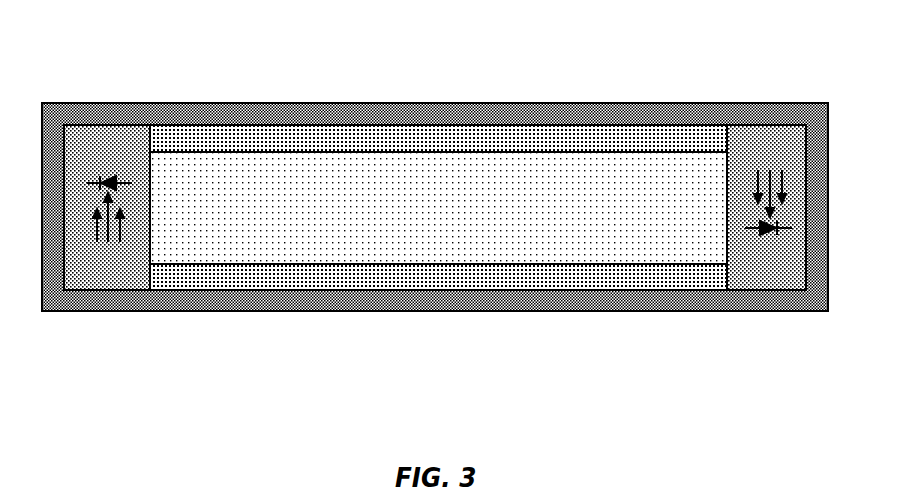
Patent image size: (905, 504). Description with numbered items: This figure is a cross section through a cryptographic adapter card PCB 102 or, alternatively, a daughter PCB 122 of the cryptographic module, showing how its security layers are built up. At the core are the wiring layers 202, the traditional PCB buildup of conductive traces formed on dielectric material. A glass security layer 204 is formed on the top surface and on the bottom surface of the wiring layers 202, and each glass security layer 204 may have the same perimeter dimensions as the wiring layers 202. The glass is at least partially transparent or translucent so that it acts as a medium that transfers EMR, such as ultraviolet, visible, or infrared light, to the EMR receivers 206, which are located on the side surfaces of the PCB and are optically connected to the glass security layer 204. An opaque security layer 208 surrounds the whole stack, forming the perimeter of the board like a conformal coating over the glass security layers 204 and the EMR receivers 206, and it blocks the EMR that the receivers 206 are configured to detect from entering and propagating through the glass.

The cryptographic adapter card PCB 102 is at (435, 214).
The daughter PCB 122 is at (435, 214).
The wiring layer 202 is at (547, 172).
The glass security layer 204 is at (662, 142).
The EMR receiver 206 is at (120, 140).
The opaque security layer 208 is at (220, 303).